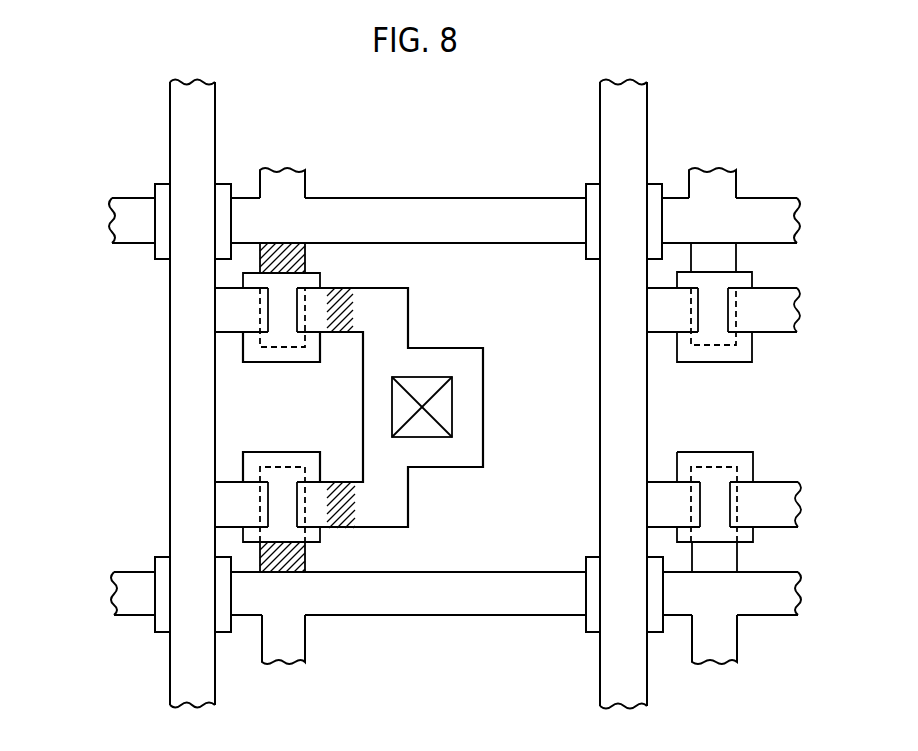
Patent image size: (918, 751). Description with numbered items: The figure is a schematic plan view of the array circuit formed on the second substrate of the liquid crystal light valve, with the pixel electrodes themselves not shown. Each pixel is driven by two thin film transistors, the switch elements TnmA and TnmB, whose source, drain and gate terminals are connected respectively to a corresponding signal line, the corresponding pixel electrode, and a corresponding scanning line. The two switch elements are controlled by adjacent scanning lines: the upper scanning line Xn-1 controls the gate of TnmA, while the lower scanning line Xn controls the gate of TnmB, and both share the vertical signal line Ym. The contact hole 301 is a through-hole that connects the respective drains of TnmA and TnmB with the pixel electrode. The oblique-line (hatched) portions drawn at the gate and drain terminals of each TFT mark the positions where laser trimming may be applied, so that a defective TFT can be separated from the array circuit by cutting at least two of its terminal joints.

The signal line Ym is at (197, 122).
The scanning line Xn-1 is at (130, 218).
The scanning line Xn is at (128, 593).
The switch element (TFT) TnmA is at (330, 263).
The switch element (TFT) TnmB is at (332, 537).
The contact hole 301 is at (427, 438).